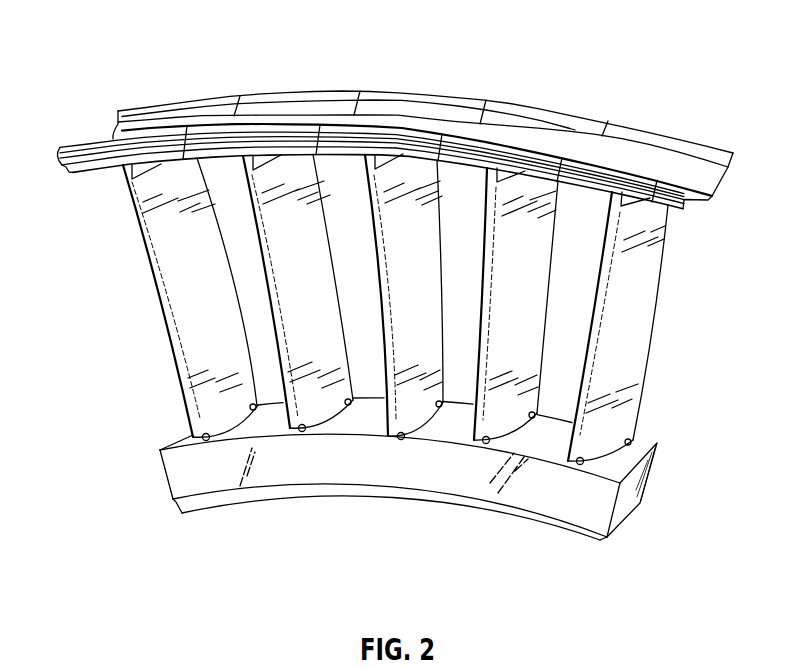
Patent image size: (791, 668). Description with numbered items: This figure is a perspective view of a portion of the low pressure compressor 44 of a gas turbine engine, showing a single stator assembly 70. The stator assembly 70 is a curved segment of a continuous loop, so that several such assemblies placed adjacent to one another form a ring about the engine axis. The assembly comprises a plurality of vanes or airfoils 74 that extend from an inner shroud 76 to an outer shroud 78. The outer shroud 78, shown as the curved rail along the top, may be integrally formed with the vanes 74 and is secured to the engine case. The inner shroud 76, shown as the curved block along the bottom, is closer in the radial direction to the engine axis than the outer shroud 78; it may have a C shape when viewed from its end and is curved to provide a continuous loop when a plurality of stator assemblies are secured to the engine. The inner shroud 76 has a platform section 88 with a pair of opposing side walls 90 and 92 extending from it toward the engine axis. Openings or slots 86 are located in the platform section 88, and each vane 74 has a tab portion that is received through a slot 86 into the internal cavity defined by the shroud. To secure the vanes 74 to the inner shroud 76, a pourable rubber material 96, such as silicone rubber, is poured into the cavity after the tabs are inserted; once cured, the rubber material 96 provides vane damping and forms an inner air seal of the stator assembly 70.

The low pressure compressor 44 is at (123, 53).
The stator assembly 70 is at (293, 85).
The outer shroud 78 is at (200, 117).
The vane 74 is at (630, 345).
The inner shroud 76 is at (633, 447).
The slot 86 is at (322, 411).
The platform section 88 is at (430, 432).
The side wall 90 is at (597, 512).
The side wall 92 is at (657, 473).
The rubber material 96 is at (508, 503).